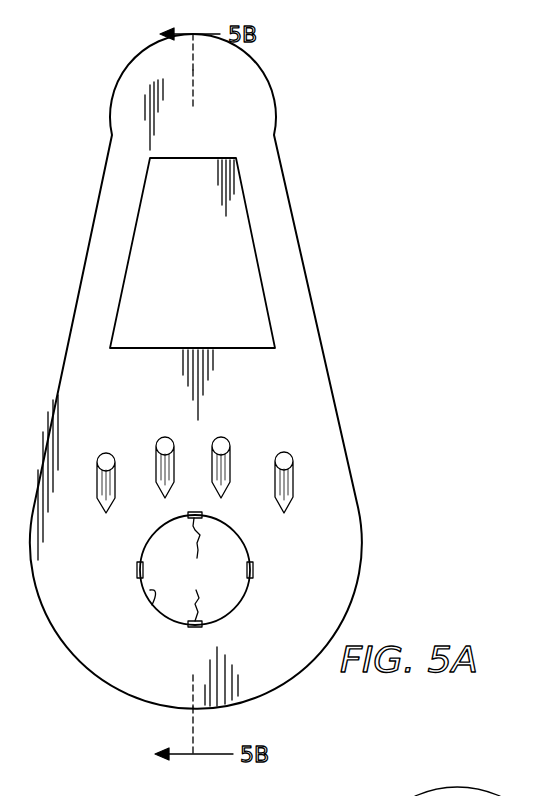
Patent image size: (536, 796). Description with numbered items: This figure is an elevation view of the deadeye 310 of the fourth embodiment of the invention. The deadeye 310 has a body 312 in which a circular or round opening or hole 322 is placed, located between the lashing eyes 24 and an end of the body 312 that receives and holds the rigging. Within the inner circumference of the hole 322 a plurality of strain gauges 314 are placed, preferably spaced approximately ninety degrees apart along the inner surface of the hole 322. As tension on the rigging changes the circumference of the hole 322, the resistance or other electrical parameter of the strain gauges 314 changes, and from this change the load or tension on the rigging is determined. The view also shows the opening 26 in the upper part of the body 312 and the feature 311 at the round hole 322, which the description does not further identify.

The deadeye 310 is at (330, 300).
The body 312 is at (112, 232).
The trapezoidal opening 26 is at (225, 253).
The lashing eyes 24 is at (284, 462).
The circular opening 311 is at (225, 557).
The strain gauges 314 is at (196, 569).
The circular opening 322 is at (152, 605).